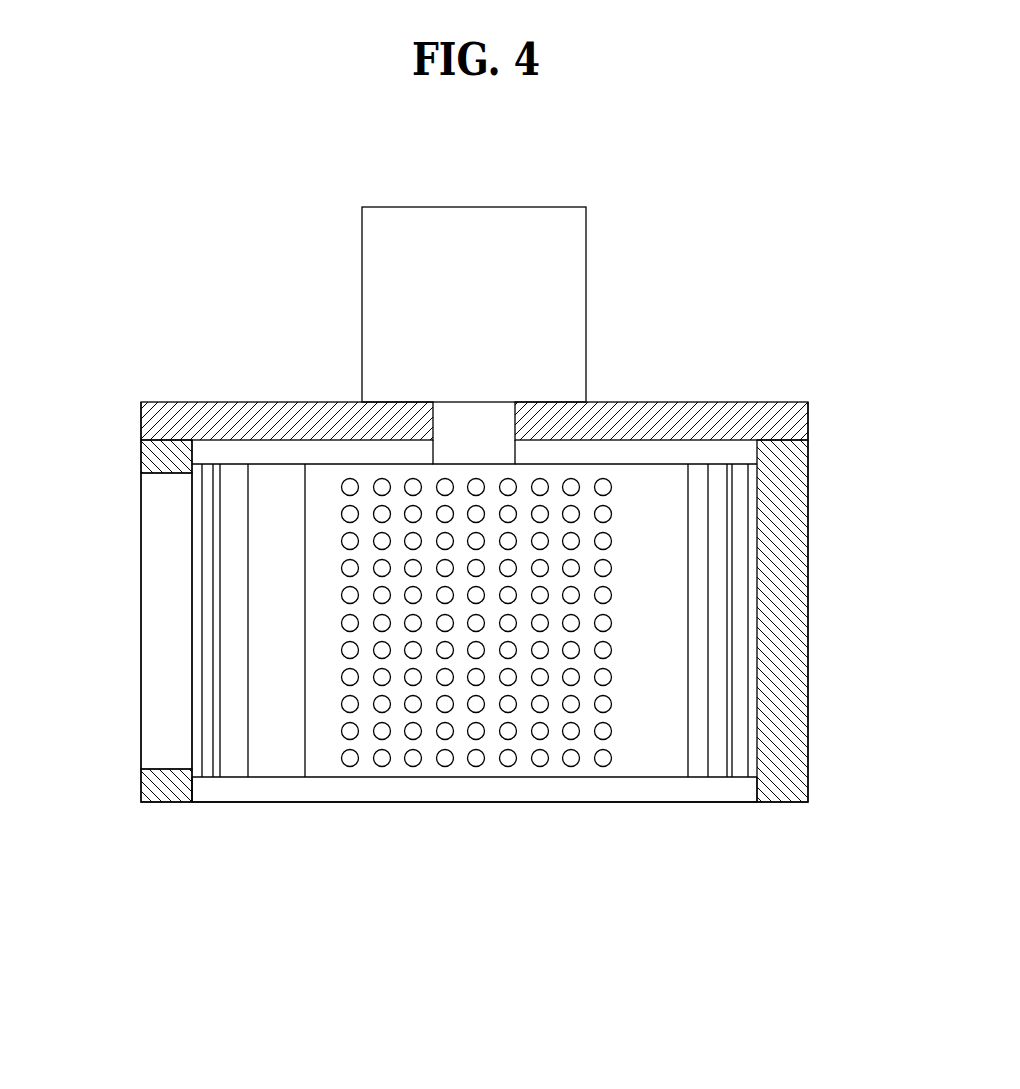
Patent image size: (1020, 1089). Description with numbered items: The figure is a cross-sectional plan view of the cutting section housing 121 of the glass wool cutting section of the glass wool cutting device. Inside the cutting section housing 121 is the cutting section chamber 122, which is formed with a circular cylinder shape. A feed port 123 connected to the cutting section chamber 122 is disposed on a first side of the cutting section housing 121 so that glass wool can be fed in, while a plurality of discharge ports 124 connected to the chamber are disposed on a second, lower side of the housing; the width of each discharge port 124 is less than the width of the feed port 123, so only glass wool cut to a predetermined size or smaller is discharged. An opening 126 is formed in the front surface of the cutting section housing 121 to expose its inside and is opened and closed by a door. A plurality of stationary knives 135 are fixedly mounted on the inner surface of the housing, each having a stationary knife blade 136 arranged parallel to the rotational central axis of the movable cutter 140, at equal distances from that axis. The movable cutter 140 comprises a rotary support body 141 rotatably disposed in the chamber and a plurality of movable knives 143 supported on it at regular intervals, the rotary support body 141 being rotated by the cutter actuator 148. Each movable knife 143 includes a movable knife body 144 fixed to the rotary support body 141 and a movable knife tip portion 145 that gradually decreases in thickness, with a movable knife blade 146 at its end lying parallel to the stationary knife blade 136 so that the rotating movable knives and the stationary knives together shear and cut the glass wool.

The cutting section housing 121 is at (808, 480).
The cutting section chamber 122 is at (643, 457).
The feed port 123 is at (152, 513).
The discharge port 124 is at (350, 478).
The opening 126 is at (197, 803).
The stationary knife 135 is at (191, 443).
The stationary knife blade 136 is at (222, 470).
The movable cutter 140 is at (542, 779).
The rotary support body 141 is at (638, 778).
The movable knife 143 is at (271, 779).
The movable knife body 144 is at (292, 760).
The movable knife tip portion 145 is at (233, 763).
The movable knife blade 146 is at (212, 763).
The cutter actuator 148 is at (570, 272).